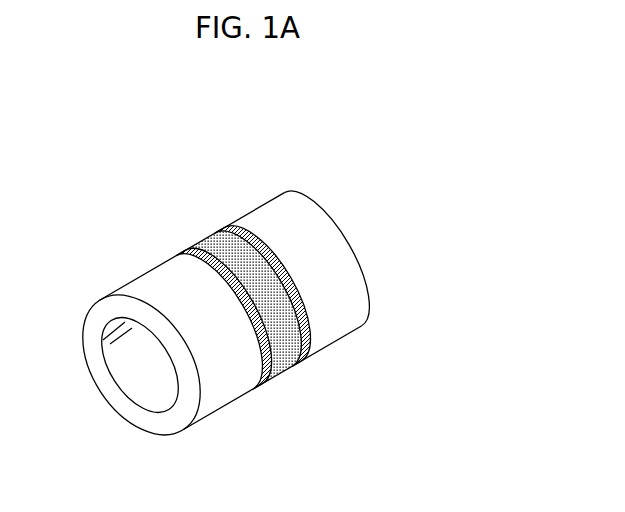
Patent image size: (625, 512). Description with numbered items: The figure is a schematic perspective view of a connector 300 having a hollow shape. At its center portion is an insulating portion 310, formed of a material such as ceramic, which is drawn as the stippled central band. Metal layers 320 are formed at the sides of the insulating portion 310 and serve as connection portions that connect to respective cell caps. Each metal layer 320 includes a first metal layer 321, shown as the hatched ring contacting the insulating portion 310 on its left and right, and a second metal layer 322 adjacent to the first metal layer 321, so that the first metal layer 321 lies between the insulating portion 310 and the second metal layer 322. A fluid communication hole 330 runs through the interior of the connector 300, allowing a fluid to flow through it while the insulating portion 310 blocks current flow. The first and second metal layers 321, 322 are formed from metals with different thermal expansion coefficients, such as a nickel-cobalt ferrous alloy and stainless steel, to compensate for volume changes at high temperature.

The connector 300 is at (371, 180).
The insulating portion 310 is at (282, 342).
The metal layer 320 is at (143, 190).
The first metal layer 321 is at (192, 247).
The second metal layer 322 is at (151, 286).
The fluid communication hole 330 is at (153, 375).